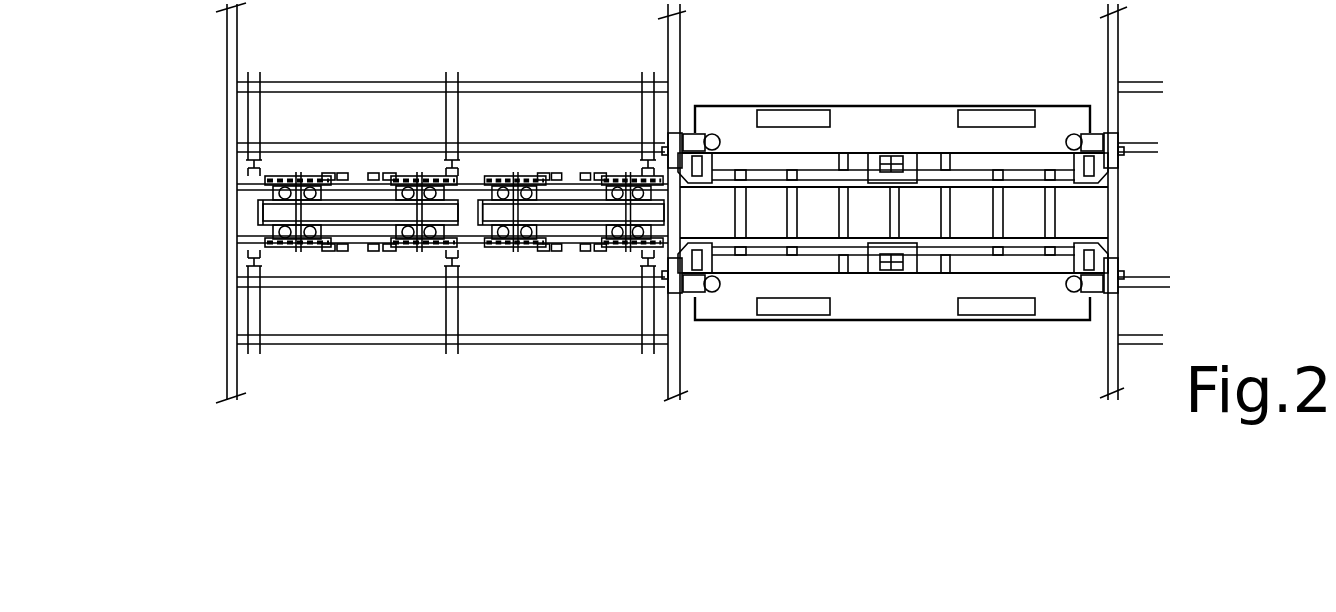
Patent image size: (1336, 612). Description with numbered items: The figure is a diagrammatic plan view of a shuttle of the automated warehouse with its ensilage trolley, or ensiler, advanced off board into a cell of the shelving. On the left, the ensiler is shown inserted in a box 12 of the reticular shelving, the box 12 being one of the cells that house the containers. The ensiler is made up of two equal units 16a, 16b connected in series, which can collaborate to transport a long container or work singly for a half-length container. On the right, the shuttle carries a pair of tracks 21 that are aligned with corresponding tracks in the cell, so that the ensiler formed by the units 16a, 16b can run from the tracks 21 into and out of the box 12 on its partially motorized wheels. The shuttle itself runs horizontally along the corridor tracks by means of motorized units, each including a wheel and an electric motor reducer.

The cell or box 12 is at (317, 155).
The ensiler unit 16a is at (378, 190).
The ensiler unit 16b is at (542, 180).
The shuttle track 21 is at (823, 182).